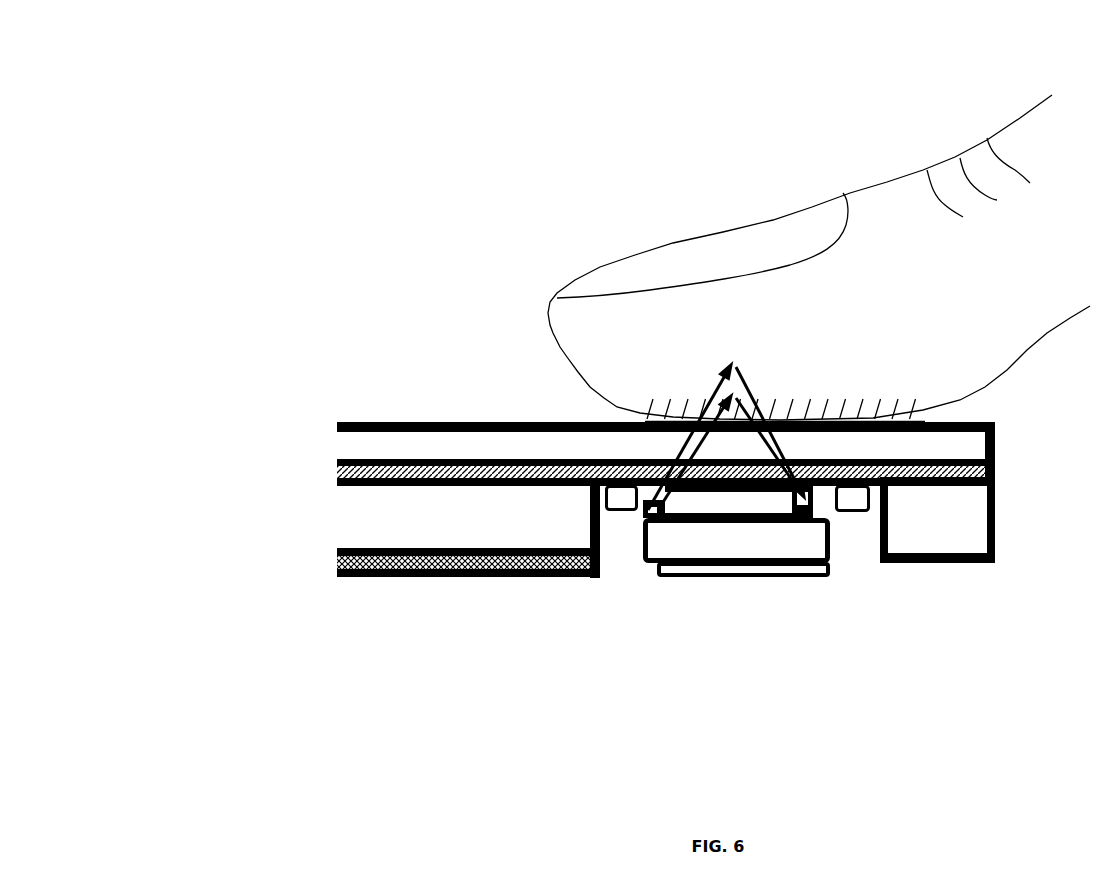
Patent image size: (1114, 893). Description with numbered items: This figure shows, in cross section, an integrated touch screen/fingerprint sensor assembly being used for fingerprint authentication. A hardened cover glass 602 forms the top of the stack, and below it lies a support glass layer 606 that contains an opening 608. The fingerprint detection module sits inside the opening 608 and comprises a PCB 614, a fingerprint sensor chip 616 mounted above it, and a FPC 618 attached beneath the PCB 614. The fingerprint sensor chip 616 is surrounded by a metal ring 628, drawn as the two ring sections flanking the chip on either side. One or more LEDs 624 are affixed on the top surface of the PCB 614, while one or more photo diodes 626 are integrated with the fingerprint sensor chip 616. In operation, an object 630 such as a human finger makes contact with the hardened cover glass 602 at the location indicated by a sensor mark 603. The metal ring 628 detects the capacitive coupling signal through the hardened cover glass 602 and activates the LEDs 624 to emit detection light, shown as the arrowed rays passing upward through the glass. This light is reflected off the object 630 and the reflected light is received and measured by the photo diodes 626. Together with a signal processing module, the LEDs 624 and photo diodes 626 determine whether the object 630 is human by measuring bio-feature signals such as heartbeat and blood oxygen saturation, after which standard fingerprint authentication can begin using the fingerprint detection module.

The hardened cover glass 602 is at (352, 447).
The sensor mark 603 is at (653, 420).
The support glass layer 606 is at (357, 530).
The opening 608 is at (852, 540).
The PCB 614 is at (720, 547).
The fingerprint sensor chip 616 is at (757, 564).
The FPC 618 is at (788, 577).
The LEDs 624 is at (652, 508).
The photo diodes 626 is at (938, 449).
The metal ring 628 is at (620, 513).
The object 630 is at (897, 215).